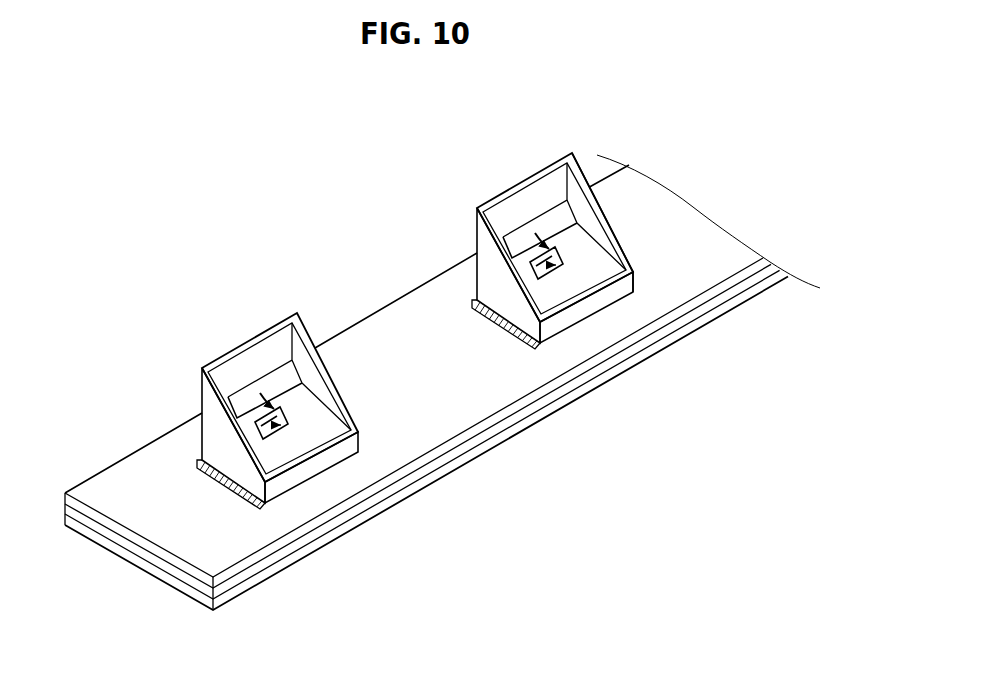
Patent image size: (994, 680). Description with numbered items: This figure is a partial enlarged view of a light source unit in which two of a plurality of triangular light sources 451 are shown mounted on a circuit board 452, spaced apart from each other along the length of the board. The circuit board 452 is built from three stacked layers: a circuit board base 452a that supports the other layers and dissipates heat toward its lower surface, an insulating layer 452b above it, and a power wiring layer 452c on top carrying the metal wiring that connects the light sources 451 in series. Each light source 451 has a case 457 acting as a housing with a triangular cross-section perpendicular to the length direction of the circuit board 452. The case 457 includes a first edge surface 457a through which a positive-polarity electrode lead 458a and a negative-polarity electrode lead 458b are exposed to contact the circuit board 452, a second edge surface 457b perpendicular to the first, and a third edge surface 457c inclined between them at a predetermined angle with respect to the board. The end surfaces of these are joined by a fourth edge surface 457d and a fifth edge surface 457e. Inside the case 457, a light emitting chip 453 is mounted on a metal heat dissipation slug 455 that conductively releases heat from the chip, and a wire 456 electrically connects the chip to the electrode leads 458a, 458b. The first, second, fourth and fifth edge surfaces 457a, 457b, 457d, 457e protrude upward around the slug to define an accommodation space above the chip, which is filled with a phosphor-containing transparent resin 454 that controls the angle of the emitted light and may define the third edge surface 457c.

The light source 451 is at (147, 298).
The circuit board 452 is at (432, 627).
The circuit board base 452a is at (303, 552).
The insulating layer 452b is at (355, 513).
The power wiring layer 452c is at (413, 470).
The light emitting chip 453 is at (562, 224).
The transparent resin 454 is at (505, 211).
The heat dissipation slug 455 is at (593, 200).
The wire 456 is at (556, 230).
The case 457 is at (198, 399).
The first edge surface 457a is at (589, 293).
The second edge surface 457b is at (252, 338).
The third edge surface 457c is at (580, 183).
The fourth edge surface 457d is at (220, 441).
The fifth edge surface 457e is at (633, 258).
The positive-polarity electrode lead 458a is at (201, 472).
The negative-polarity electrode lead 458b is at (235, 489).